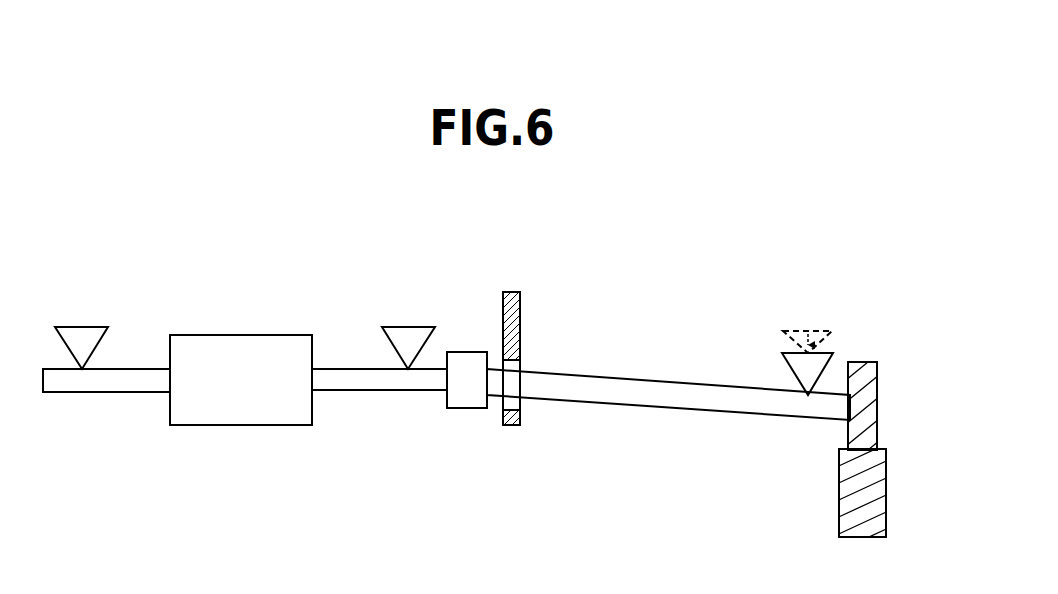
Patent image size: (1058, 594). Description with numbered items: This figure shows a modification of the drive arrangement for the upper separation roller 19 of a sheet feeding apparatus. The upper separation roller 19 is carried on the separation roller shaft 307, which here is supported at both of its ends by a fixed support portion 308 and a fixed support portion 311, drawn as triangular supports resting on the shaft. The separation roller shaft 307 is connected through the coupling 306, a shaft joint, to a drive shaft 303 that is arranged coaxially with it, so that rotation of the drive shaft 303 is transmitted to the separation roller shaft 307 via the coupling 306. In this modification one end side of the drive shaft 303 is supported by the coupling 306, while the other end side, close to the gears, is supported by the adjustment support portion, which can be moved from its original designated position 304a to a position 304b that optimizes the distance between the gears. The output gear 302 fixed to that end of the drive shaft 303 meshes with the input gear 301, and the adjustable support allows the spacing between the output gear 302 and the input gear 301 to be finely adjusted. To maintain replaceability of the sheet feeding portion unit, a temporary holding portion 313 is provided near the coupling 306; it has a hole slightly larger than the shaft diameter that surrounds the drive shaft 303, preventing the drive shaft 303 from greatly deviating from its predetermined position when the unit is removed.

The upper separation roller 19 is at (242, 335).
The input gear 301 is at (886, 490).
The output gear 302 is at (877, 400).
The drive shaft 303 is at (670, 409).
The original designated position 304a is at (822, 328).
The position for optimizing the distance between the gears 304b is at (784, 371).
The coupling 306 is at (467, 408).
The separation roller shaft 307 is at (370, 391).
The fixed support portion 308 is at (85, 322).
The fixed support portion 311 is at (412, 324).
The temporary holding portion 313 is at (520, 312).